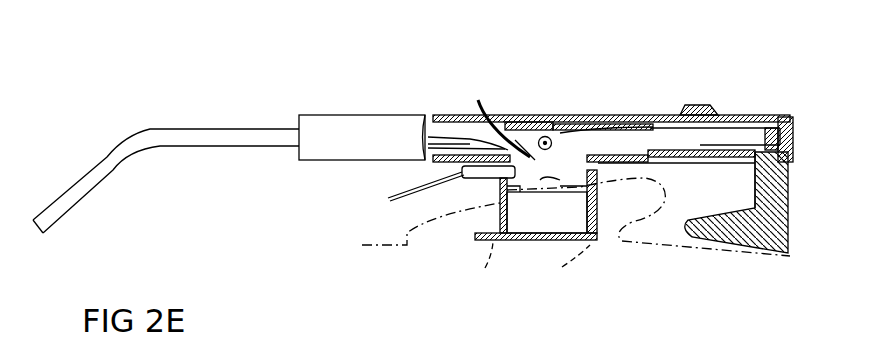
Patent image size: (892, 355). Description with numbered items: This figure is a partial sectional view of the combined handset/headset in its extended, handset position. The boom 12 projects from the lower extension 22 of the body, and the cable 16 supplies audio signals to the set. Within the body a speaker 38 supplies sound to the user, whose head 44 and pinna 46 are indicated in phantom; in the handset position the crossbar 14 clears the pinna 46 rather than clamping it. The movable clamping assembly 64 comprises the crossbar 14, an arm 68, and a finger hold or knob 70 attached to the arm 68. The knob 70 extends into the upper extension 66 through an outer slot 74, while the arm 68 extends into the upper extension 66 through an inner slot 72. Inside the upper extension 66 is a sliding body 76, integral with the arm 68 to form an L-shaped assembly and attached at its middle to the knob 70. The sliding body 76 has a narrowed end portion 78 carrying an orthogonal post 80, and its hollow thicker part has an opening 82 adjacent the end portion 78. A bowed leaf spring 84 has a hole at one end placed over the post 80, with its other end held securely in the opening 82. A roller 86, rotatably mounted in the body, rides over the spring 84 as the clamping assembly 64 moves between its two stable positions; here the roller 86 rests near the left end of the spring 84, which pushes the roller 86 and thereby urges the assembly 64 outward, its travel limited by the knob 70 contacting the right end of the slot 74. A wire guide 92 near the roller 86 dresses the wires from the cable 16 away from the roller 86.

The boom 12 is at (193, 130).
The lower extension 22 is at (352, 125).
The wire guide 92 is at (493, 126).
The narrowed end portion 78 is at (537, 126).
The post 80 is at (508, 123).
The roller 86 is at (553, 136).
The bowed leaf spring 84 is at (600, 125).
The outer slot 74 is at (638, 118).
The finger hold or knob 70 is at (695, 106).
The opening 82 is at (733, 135).
The sliding body 76 is at (770, 145).
The upper extension 66 is at (792, 130).
The cable 16 is at (420, 193).
The inner slot 72 is at (710, 158).
The head 44 is at (398, 242).
The speaker 38 is at (545, 220).
The pinna 46 is at (627, 220).
The crossbar 14 is at (703, 238).
The arm 68 is at (790, 245).
The movable clamping assembly 64 is at (800, 182).